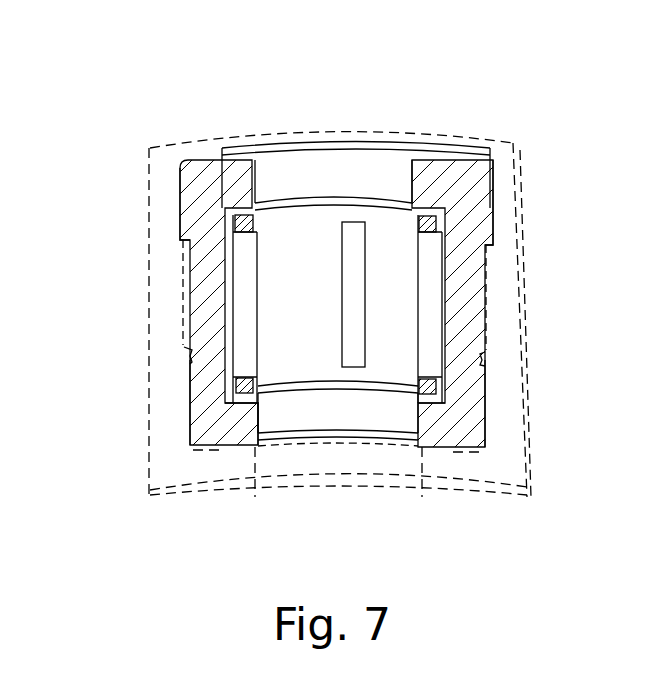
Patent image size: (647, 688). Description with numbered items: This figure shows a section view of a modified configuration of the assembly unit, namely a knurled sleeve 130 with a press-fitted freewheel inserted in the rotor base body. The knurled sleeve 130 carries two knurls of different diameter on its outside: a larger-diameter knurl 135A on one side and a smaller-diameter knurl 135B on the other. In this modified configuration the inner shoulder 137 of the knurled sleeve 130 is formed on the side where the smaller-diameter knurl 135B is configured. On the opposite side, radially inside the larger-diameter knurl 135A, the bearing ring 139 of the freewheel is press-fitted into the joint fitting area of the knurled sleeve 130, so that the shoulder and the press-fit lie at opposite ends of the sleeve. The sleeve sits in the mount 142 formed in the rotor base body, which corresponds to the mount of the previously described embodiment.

The knurled sleeve 130 is at (470, 340).
The larger-diameter knurl 135A is at (493, 187).
The smaller-diameter knurl 135B is at (190, 401).
The inner shoulder 137 is at (247, 427).
The bearing ring 139 is at (313, 175).
The mount 142 is at (187, 299).